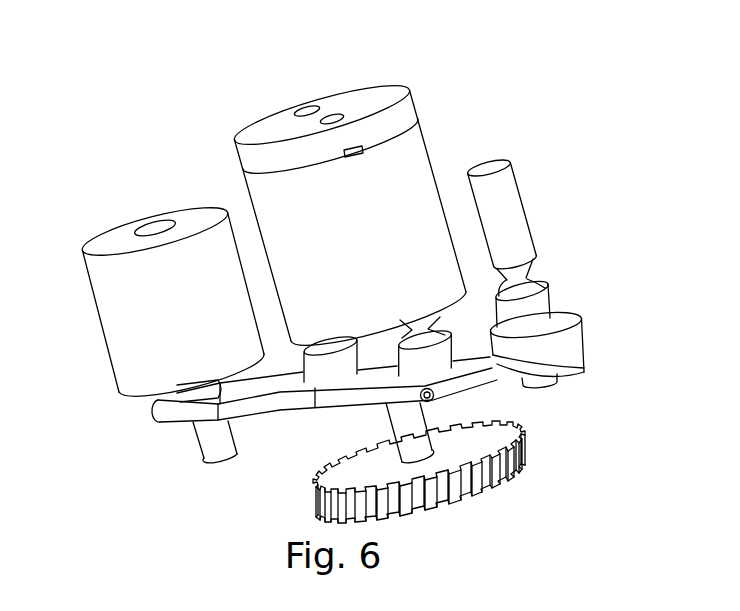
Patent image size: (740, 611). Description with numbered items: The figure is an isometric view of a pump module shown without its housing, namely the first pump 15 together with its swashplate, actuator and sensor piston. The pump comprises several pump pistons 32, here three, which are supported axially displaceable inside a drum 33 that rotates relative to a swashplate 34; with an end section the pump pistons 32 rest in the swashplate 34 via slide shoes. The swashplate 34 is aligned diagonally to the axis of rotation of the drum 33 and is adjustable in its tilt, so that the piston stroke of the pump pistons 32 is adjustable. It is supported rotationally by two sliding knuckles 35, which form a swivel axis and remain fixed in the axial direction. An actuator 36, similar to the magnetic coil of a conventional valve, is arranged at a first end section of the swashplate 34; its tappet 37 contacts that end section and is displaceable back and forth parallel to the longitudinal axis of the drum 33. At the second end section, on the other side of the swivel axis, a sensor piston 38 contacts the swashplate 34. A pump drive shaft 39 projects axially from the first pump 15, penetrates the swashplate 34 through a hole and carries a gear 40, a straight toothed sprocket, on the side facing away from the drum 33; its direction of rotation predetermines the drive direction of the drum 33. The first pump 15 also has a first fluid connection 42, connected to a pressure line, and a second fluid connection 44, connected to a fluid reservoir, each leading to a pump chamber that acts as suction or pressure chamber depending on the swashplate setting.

The first pump 15 is at (416, 150).
The pump pistons 32 is at (402, 328).
The drum 33 is at (410, 222).
The swashplate 34 is at (473, 382).
The sliding knuckles 35 is at (434, 395).
The actuator 36 is at (122, 320).
The tappet 37 is at (208, 442).
The sensor piston 38 is at (500, 210).
The pump drive shaft 39 is at (413, 447).
The gear 40 is at (352, 478).
The first fluid connection 42 is at (307, 106).
The second fluid connection 44 is at (329, 114).